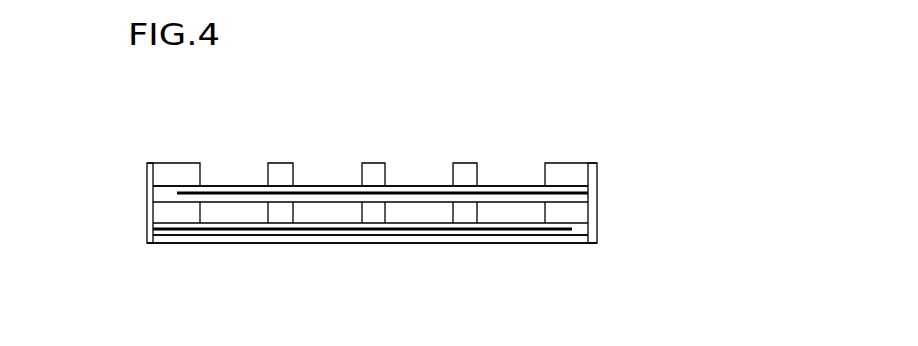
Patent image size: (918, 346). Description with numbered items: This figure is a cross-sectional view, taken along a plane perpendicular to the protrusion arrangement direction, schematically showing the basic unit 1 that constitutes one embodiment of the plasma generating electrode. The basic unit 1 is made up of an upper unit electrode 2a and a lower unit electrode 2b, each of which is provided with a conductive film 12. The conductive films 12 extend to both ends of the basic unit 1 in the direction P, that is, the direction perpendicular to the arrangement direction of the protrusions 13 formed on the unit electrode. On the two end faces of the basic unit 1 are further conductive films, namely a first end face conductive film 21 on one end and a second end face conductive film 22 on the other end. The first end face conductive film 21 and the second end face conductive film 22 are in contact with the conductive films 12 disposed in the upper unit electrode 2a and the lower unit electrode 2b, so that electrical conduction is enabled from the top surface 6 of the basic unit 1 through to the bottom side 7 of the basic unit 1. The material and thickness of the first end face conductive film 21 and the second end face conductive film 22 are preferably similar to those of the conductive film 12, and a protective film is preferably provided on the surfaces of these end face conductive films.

The basic unit 1 is at (600, 135).
The upper unit electrode 2a is at (508, 183).
The lower unit electrode 2b is at (212, 245).
The top surface of the basic unit 6 is at (562, 162).
The bottom side of the basic unit 7 is at (532, 243).
The conductive film 12 is at (242, 228).
The protrusion 13 is at (373, 162).
The first end face conductive film 21 is at (597, 173).
The second end face conductive film 22 is at (147, 175).
The direction perpendicular to the protrusion arrangement direction P is at (503, 259).